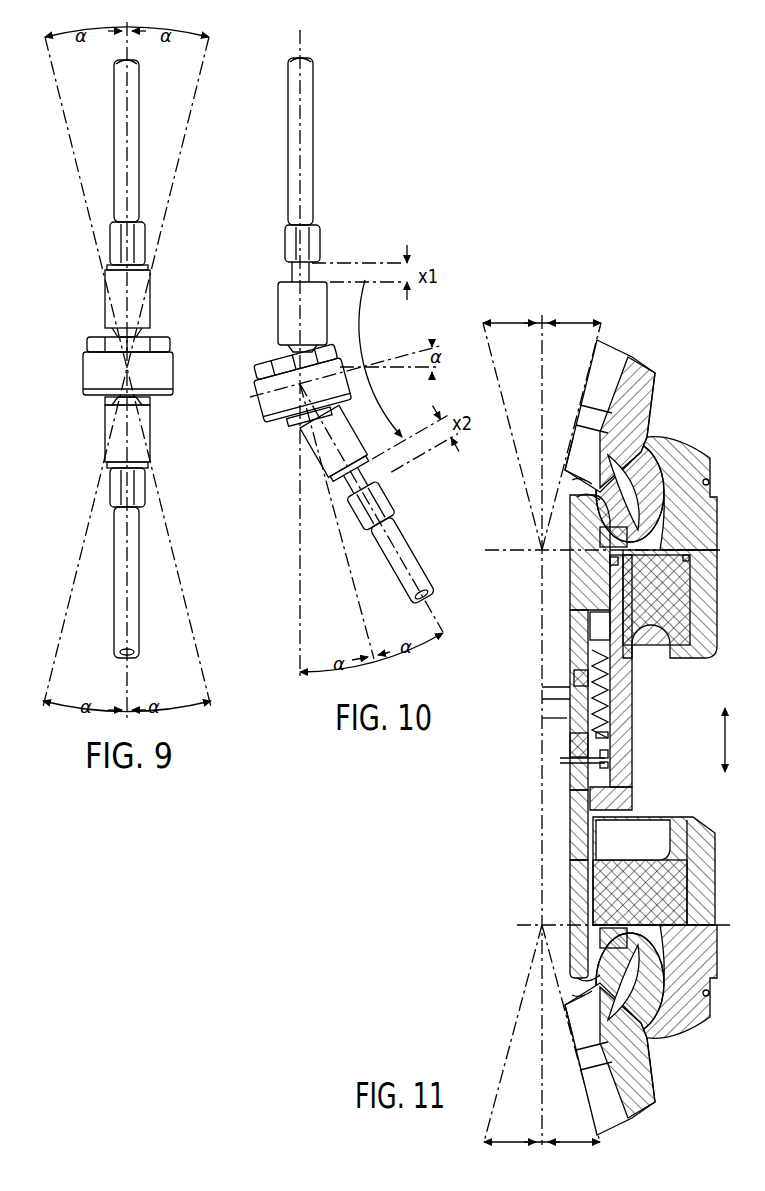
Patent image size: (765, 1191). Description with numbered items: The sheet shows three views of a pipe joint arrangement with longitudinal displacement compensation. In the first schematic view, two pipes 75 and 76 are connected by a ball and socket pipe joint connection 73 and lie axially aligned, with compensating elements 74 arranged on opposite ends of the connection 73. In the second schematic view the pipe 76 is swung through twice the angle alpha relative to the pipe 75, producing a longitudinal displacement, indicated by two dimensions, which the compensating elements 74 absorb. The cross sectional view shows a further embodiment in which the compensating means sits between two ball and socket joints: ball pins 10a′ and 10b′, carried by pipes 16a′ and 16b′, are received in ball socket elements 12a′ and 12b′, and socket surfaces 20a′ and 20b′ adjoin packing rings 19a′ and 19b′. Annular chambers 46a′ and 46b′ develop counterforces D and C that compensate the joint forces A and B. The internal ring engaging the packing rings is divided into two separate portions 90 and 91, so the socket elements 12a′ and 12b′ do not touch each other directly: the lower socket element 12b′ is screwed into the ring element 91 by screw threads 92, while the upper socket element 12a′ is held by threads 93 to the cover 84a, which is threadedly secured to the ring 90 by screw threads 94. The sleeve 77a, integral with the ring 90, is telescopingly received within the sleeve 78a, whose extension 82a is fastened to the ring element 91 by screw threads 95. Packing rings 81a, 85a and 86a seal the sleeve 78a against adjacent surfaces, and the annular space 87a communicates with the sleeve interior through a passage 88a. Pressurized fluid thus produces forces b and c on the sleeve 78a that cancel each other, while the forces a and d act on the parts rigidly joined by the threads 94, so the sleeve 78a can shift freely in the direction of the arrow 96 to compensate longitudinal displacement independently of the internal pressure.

In FIG. 9, the ball and socket pipe joint connection 73 is at (82, 380).
In FIG. 9, the longitudinal displacement compensating element 74 is at (102, 297).
In FIG. 9, the pipe 75 is at (137, 97).
In FIG. 10, the pipe 75 is at (310, 97).
In FIG. 9, the pipe 76 is at (117, 628).
In FIG. 10, the pipe 76 is at (408, 588).
In FIG. 11, the pipe (ball pin pipe element) 16a′ is at (638, 397).
In FIG. 11, the ball socket element 12a′ is at (690, 445).
In FIG. 11, the ball pin 10a′ is at (590, 470).
In FIG. 11, the force A is at (575, 484).
In FIG. 11, the socket surface 20a′ is at (597, 507).
In FIG. 11, the packing ring 19a′ is at (603, 533).
In FIG. 11, the annular chamber 46a′ is at (642, 483).
In FIG. 11, the counterforce D is at (709, 483).
In FIG. 11, the screw threads 94 is at (611, 571).
In FIG. 11, the internal ring portion 90 is at (595, 592).
In FIG. 11, the sleeve 77a is at (575, 628).
In FIG. 11, the screw threads 93 is at (690, 620).
In FIG. 11, the packing ring 81a is at (576, 676).
In FIG. 11, the force (arrow a) a is at (568, 694).
In FIG. 11, the force (arrow b) b is at (565, 718).
In FIG. 11, the annular space 87a is at (594, 744).
In FIG. 11, the passage 88a is at (593, 758).
In FIG. 11, the sleeve extension 82a is at (577, 799).
In FIG. 11, the cover 84a is at (625, 672).
In FIG. 11, the sleeve 78a is at (612, 732).
In FIG. 11, the packing ring 85a is at (610, 740).
In FIG. 11, the force (arrow c) c is at (609, 757).
In FIG. 11, the force (arrow d) d is at (634, 767).
In FIG. 11, the packing ring 86a is at (605, 787).
In FIG. 11, the arrow (direction of displacement) 96 is at (738, 740).
In FIG. 11, the internal ring element 91 is at (627, 900).
In FIG. 11, the screw threads 92 is at (690, 867).
In FIG. 11, the screw threads 95 is at (587, 890).
In FIG. 11, the packing ring 19b′ is at (600, 940).
In FIG. 11, the force B is at (577, 993).
In FIG. 11, the counterforce C is at (662, 947).
In FIG. 11, the annular chamber 46b′ is at (642, 980).
In FIG. 11, the socket surface 20b′ is at (590, 1007).
In FIG. 11, the ball pin 10b′ is at (602, 1013).
In FIG. 11, the ball socket element 12b′ is at (690, 1012).
In FIG. 11, the pipe (ball pin pipe element) 16b′ is at (640, 1087).